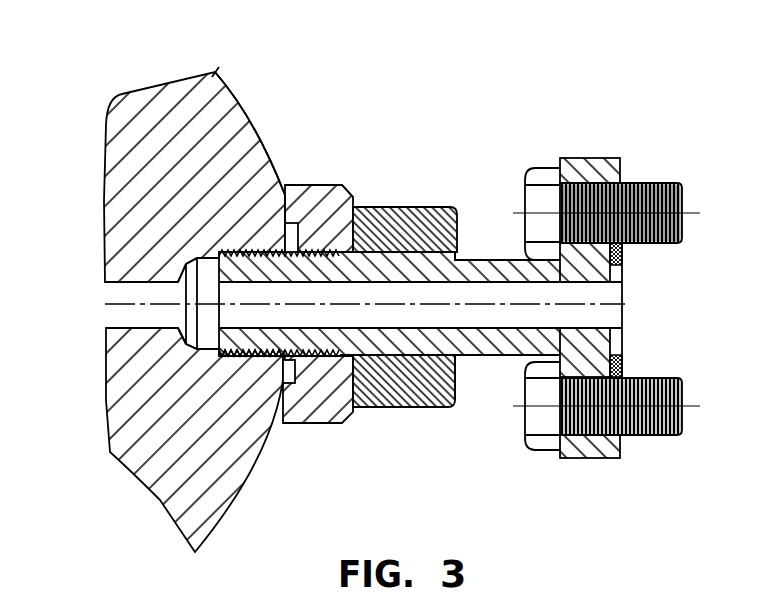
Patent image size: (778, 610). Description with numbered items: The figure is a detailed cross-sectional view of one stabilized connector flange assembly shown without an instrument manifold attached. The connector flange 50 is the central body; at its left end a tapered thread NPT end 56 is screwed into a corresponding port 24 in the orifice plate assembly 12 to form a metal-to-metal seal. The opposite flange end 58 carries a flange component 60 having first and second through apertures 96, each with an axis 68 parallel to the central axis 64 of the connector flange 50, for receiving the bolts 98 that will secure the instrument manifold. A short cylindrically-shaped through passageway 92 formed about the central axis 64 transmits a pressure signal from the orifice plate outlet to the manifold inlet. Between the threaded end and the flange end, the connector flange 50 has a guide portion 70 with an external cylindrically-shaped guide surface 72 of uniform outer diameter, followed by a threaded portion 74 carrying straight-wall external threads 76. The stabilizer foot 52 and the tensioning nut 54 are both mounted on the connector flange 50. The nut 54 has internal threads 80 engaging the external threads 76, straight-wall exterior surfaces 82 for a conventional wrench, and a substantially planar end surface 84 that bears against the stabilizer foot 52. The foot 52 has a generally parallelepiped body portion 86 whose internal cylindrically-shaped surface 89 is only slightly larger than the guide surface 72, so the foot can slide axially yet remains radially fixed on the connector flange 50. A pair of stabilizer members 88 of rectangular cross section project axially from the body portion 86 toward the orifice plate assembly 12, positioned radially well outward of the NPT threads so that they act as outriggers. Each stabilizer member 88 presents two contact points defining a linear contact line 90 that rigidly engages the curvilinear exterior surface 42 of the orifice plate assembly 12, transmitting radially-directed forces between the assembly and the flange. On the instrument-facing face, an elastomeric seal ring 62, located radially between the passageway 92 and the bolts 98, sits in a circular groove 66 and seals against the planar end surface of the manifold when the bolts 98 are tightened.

The orifice plate assembly 12 is at (213, 76).
The port 24 is at (203, 329).
The curvilinear exterior surface 42 is at (215, 86).
The connector flange 50 is at (487, 272).
The stabilizer foot 52 is at (328, 185).
The tensioning nut 54 is at (417, 222).
The tapered thread NPT end 56 is at (260, 340).
The flange end 58 is at (603, 281).
The flange component 60 is at (601, 166).
The elastomeric seal ring 62 is at (625, 258).
The central axis 64 is at (437, 306).
The circular groove 66 is at (623, 363).
The aperture axis 68 is at (692, 213).
The guide portion 70 is at (347, 257).
The external cylindrically-shaped guide surface 72 is at (337, 360).
The threaded portion 74 is at (438, 262).
The straight-wall external threads 76 is at (452, 362).
The internal threads 80 is at (417, 343).
The straight-wall exterior surfaces 82 is at (400, 207).
The planar end surface 84 is at (338, 203).
The body portion 86 is at (310, 185).
The stabilizer members 88 is at (287, 250).
The internal cylindrically-shaped surface 89 is at (325, 207).
The linear contact line 90 is at (257, 362).
The through passageway 92 is at (392, 325).
The through apertures 96 is at (613, 183).
The bolts 98 is at (673, 436).